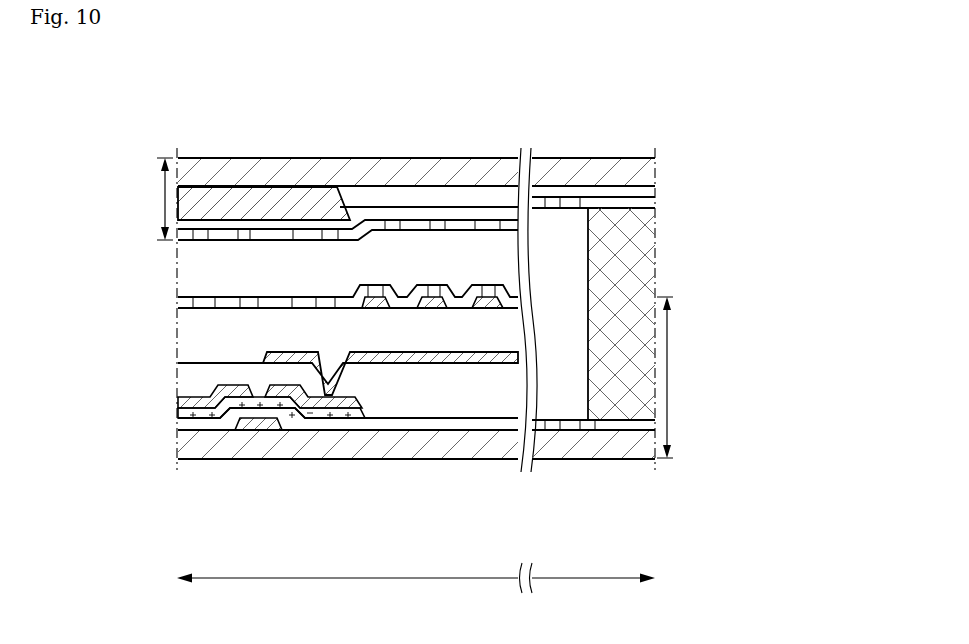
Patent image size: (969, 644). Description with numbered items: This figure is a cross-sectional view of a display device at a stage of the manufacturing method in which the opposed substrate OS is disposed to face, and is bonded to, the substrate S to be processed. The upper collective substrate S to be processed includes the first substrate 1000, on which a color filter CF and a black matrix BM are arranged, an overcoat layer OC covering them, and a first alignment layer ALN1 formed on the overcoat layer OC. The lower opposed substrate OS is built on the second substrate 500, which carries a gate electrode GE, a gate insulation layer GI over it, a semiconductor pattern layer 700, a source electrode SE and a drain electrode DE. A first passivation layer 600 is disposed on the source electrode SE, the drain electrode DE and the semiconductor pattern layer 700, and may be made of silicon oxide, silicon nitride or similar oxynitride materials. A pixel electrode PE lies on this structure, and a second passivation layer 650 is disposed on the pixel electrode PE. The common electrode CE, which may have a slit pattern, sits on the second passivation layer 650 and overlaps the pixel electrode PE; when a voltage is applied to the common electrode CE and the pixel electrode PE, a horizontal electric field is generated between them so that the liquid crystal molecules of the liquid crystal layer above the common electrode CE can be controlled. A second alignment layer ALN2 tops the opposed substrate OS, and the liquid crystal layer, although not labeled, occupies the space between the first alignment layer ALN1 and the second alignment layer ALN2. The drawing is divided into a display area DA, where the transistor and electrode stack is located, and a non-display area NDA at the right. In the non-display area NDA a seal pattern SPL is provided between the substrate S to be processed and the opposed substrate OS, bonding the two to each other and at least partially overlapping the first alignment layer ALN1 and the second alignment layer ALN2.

The first substrate 1000 is at (355, 163).
The second substrate 500 is at (507, 447).
The first passivation layer 600 is at (193, 373).
The second passivation layer 650 is at (193, 331).
The semiconductor pattern layer 700 is at (335, 410).
The black matrix BM is at (273, 197).
The color filter CF is at (430, 200).
The overcoat layer OC is at (492, 213).
The first alignment layer ALN1 is at (200, 236).
The second alignment layer ALN2 is at (193, 302).
The common electrode CE is at (378, 296).
The pixel electrode PE is at (446, 358).
The source electrode SE is at (192, 403).
The drain electrode DE is at (353, 403).
The gate electrode GE is at (252, 423).
The gate insulation layer GI is at (308, 424).
The seal pattern SPL is at (625, 320).
The substrate to be processed S is at (160, 199).
The opposed substrate OS is at (677, 377).
The display area DA is at (349, 588).
The non-display area NDA is at (593, 588).